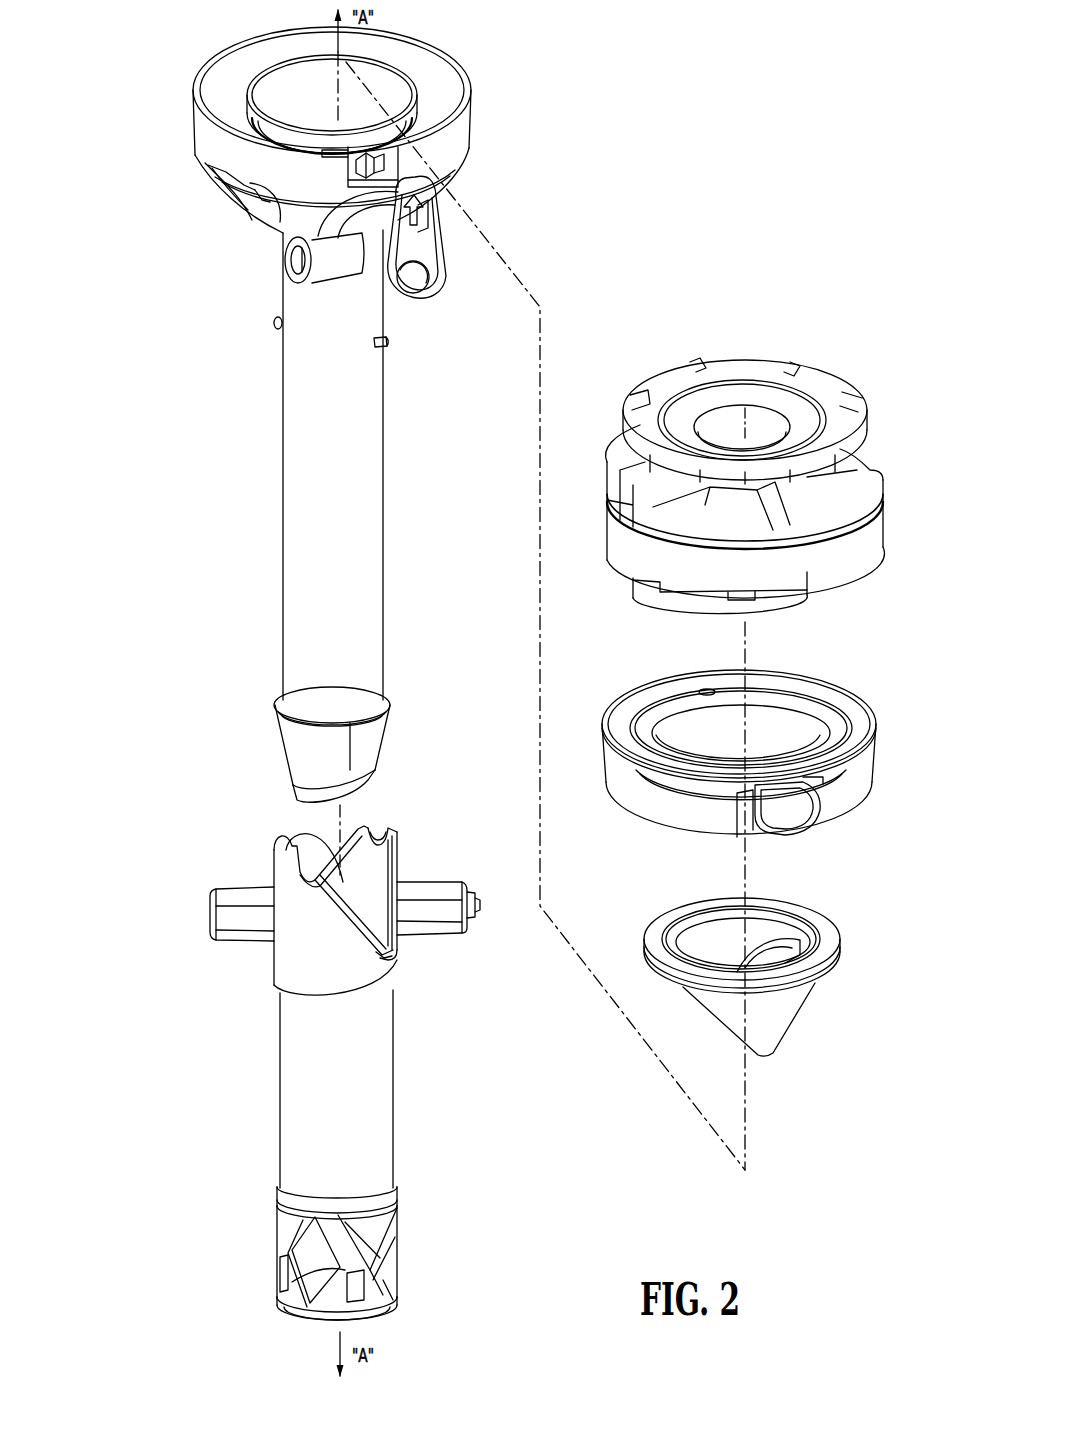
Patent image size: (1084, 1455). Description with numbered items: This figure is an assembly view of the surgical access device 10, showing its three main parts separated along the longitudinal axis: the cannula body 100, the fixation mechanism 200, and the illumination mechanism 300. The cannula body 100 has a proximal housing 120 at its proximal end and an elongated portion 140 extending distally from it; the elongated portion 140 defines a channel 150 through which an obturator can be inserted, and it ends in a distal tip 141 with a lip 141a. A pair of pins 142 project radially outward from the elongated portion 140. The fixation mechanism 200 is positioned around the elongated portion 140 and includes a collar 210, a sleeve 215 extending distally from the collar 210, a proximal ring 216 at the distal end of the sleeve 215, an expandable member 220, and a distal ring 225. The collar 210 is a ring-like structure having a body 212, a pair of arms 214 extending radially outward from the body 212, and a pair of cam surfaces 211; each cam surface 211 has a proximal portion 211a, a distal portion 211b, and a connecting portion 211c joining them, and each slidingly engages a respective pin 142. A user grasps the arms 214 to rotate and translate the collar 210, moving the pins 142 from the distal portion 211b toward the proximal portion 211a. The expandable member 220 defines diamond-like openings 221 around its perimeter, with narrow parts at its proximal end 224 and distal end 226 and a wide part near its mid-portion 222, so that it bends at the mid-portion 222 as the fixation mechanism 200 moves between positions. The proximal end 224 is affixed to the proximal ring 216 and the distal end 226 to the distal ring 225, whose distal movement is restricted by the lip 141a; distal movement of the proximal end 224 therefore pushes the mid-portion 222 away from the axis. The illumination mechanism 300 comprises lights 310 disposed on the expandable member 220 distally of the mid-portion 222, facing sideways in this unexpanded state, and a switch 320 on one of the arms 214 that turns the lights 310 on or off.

The surgical access device 10 is at (163, 92).
The cannula body 100 is at (248, 347).
The proximal housing 120 is at (462, 130).
The channel 150 is at (309, 86).
The elongated portion 140 is at (362, 500).
The pin 142 is at (378, 346).
The distal tip 141 is at (290, 800).
The lip 141a is at (281, 696).
The fixation mechanism 200 is at (242, 1091).
The collar 210 is at (241, 951).
The cam surface 211 is at (388, 824).
The proximal portion 211a is at (371, 832).
The distal portion 211b is at (396, 953).
The connecting portion 211c is at (343, 912).
The body 212 is at (304, 973).
The arm 214 is at (425, 890).
The sleeve 215 is at (383, 1033).
The proximal ring 216 is at (340, 1214).
The expandable member 220 is at (268, 1300).
The diamond-like opening 221 is at (310, 1233).
The mid-portion 222 is at (283, 1247).
The proximal end 224 is at (367, 1230).
The distal ring 225 is at (304, 1320).
The distal end 226 is at (377, 1293).
The illumination mechanism 300 is at (478, 912).
The light 310 is at (360, 1277).
The switch 320 is at (473, 888).